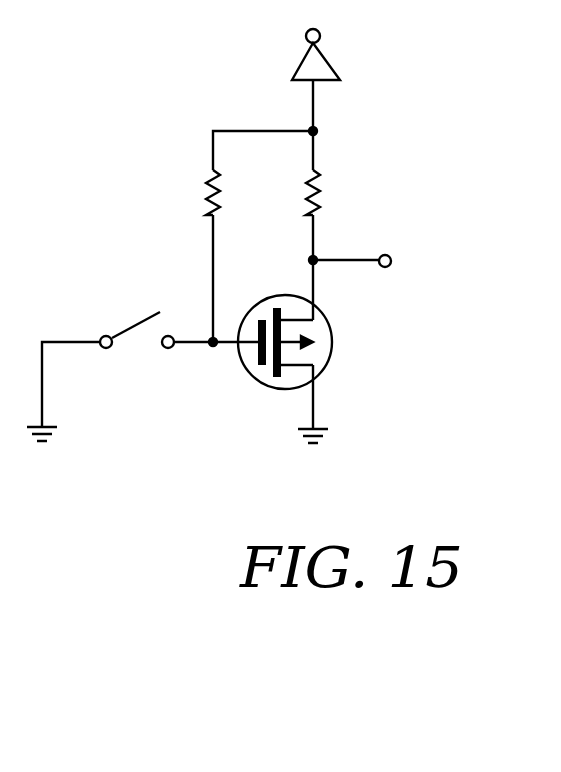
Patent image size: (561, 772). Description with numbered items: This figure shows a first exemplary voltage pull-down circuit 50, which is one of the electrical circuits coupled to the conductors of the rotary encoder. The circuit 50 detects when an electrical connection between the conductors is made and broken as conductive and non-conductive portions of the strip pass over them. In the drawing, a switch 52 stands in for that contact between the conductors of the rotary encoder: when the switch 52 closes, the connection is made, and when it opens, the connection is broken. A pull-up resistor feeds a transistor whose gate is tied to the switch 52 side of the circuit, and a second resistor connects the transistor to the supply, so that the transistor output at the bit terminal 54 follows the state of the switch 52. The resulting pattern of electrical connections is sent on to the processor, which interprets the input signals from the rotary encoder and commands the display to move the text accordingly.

The voltage pull-down circuit 50 is at (378, 178).
The switch 52 is at (148, 319).
The bit output terminal 54 is at (385, 267).